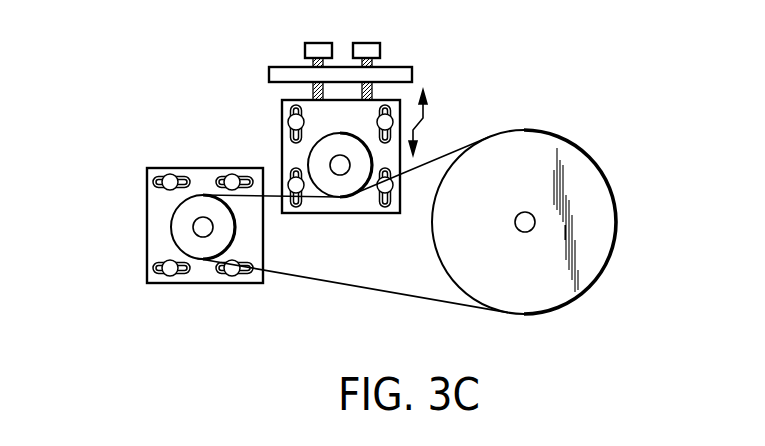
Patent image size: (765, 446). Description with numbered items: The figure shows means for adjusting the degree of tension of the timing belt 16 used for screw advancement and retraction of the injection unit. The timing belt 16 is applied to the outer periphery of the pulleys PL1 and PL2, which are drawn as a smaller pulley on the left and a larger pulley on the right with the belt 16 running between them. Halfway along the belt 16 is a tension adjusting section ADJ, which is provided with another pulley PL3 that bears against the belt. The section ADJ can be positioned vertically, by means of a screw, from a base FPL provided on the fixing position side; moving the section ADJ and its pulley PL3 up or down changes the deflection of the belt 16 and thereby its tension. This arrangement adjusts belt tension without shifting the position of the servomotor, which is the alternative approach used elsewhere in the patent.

The pulley PL1 is at (182, 227).
The pulley PL2 is at (600, 233).
The pulley PL3 is at (317, 162).
The base FPL is at (412, 72).
The tension adjusting section ADJ is at (363, 213).
The timing belt 16 is at (373, 288).